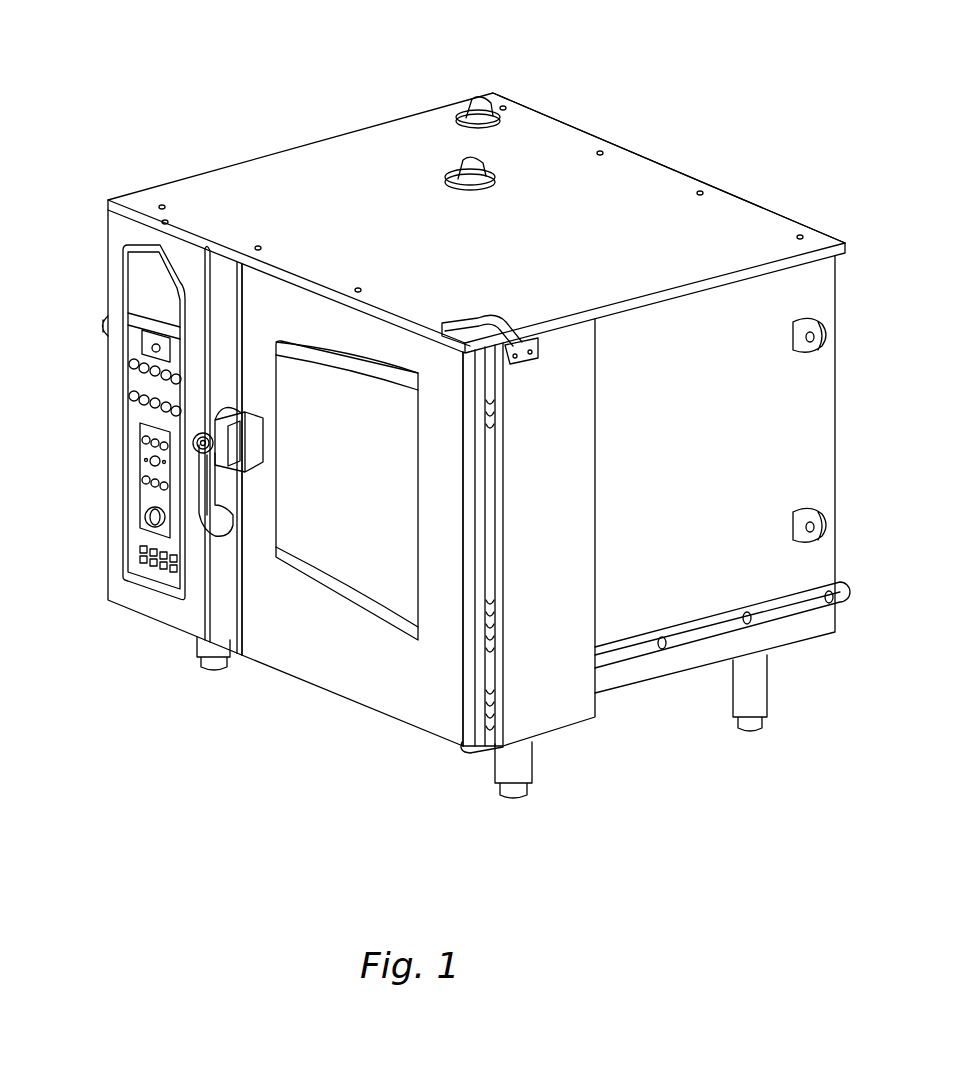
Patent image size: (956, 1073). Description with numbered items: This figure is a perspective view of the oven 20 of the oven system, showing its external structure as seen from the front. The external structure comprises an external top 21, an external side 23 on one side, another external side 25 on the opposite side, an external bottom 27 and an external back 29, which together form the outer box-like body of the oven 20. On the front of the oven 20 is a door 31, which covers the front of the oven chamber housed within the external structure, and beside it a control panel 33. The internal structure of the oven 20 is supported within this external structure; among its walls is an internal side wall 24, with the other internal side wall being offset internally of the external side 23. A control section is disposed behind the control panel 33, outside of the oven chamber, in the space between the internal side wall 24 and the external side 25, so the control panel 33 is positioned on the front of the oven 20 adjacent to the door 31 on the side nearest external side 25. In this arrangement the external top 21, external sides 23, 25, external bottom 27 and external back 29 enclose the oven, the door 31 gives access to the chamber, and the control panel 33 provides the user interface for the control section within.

The oven 20 is at (778, 68).
The external top 21 is at (502, 257).
The external side 23 is at (715, 481).
The internal side wall 24 is at (200, 611).
The external side 25 is at (257, 160).
The external bottom 27 is at (655, 683).
The external back 29 is at (695, 178).
The door 31 is at (324, 631).
The control panel 33 is at (147, 270).